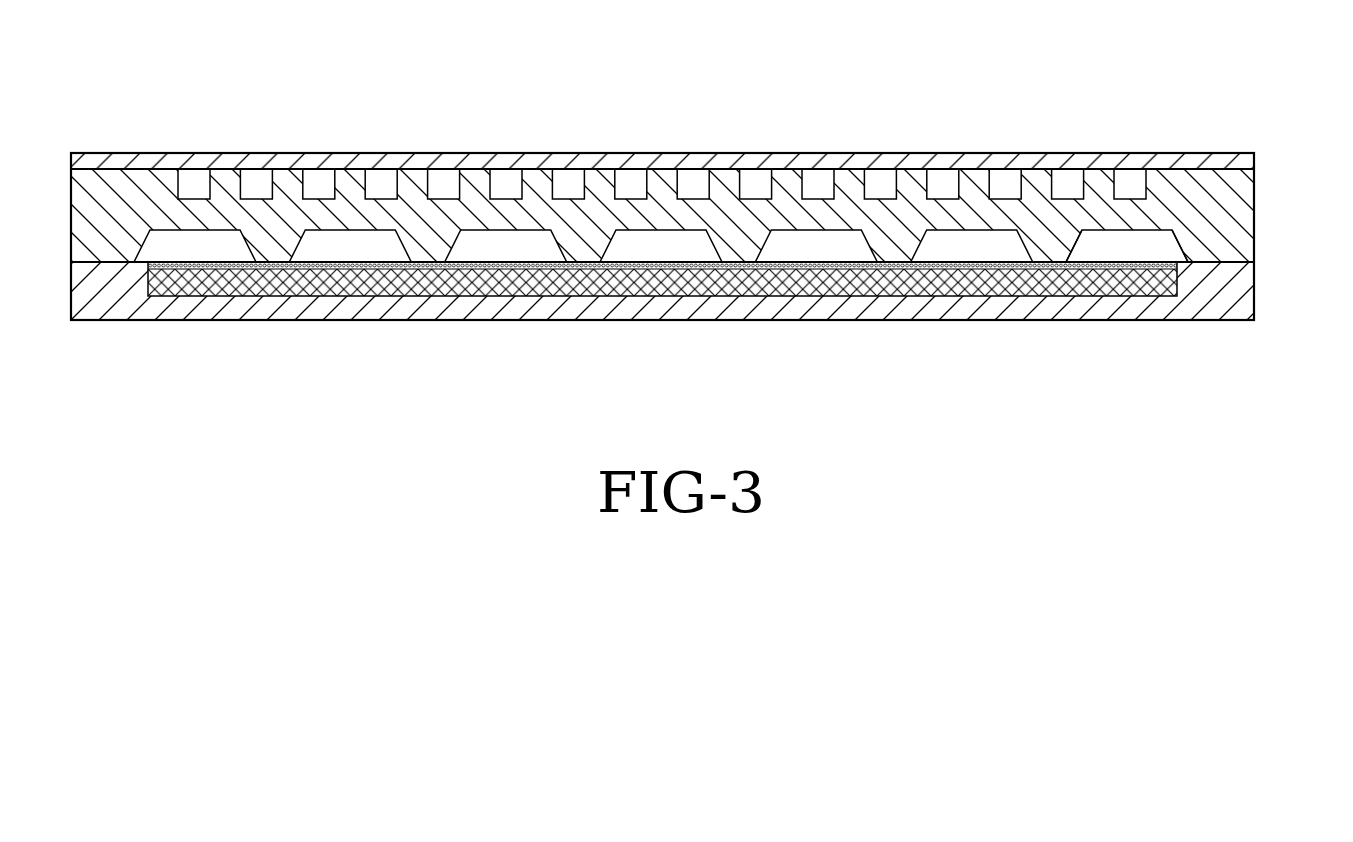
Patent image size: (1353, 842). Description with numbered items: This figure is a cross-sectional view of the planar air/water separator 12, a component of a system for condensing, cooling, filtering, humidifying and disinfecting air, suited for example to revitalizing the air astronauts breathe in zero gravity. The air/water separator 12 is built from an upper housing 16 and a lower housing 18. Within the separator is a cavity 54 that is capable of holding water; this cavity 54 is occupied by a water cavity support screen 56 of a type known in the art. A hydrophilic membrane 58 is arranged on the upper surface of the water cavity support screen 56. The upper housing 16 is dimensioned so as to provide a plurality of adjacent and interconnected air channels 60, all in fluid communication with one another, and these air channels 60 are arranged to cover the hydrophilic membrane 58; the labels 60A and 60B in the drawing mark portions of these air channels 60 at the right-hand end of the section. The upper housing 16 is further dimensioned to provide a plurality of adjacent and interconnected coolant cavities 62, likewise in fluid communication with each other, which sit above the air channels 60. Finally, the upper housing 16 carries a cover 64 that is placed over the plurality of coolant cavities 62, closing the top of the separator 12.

The air/water separator 12 is at (708, 152).
The upper housing 16 is at (131, 195).
The lower housing 18 is at (475, 310).
The cavity 54 is at (1178, 265).
The water cavity support screen 56 is at (273, 278).
The hydrophilic membrane 58 is at (177, 265).
The air channels 60 is at (178, 248).
The channel side wall 60A is at (1048, 243).
The channel side wall 60B is at (1212, 240).
The coolant cavities 62 is at (323, 178).
The cover 64 is at (373, 163).